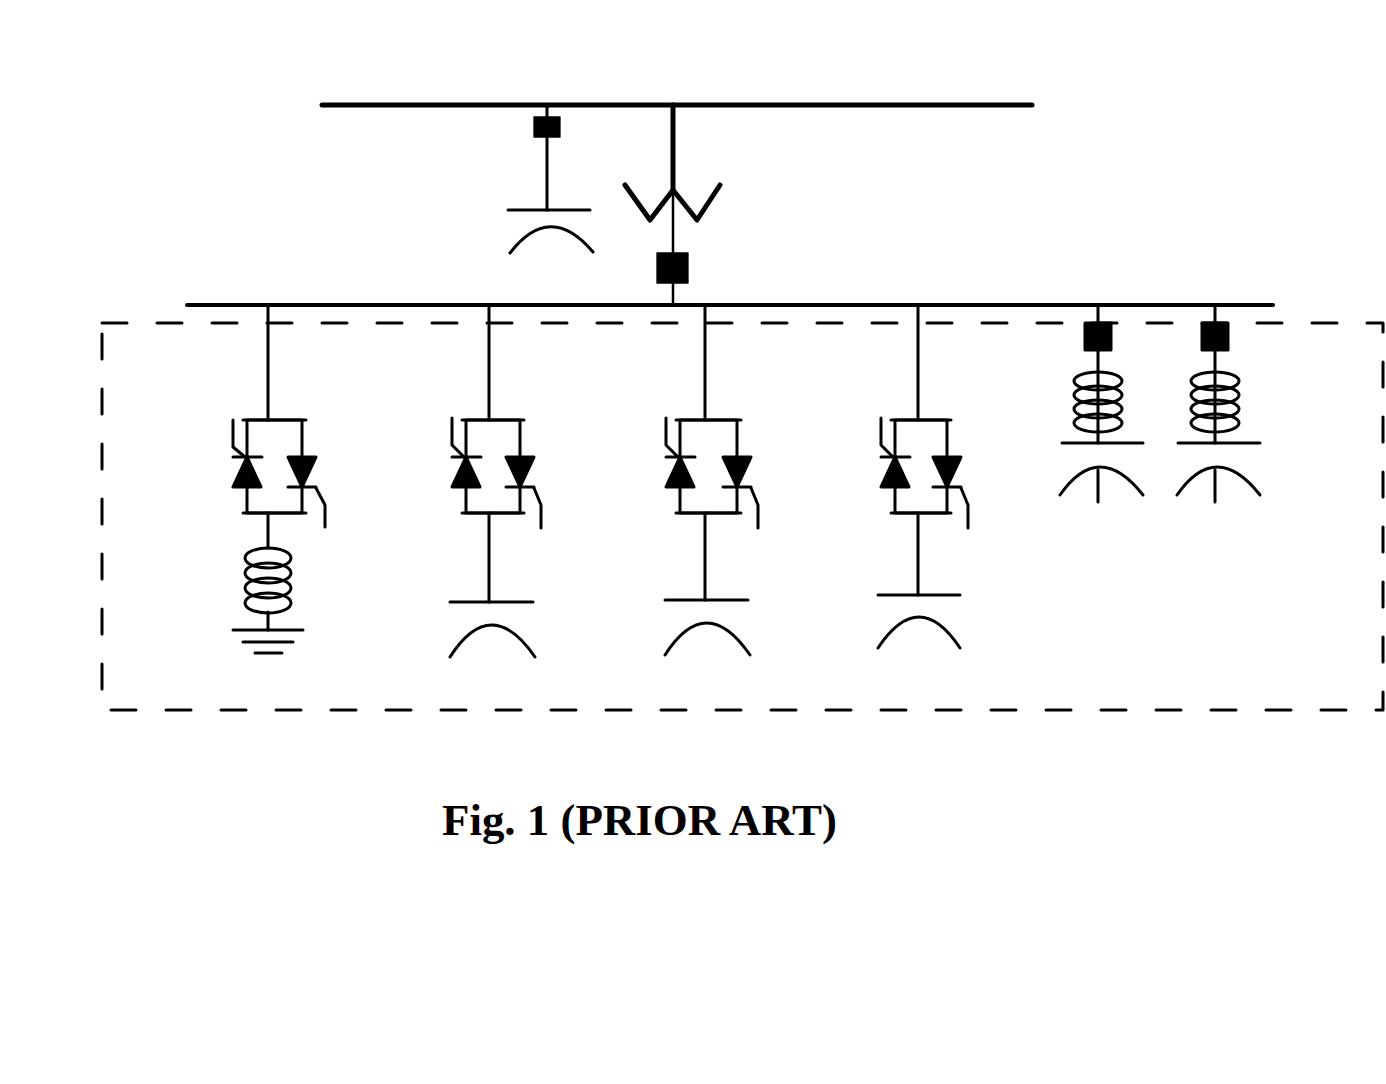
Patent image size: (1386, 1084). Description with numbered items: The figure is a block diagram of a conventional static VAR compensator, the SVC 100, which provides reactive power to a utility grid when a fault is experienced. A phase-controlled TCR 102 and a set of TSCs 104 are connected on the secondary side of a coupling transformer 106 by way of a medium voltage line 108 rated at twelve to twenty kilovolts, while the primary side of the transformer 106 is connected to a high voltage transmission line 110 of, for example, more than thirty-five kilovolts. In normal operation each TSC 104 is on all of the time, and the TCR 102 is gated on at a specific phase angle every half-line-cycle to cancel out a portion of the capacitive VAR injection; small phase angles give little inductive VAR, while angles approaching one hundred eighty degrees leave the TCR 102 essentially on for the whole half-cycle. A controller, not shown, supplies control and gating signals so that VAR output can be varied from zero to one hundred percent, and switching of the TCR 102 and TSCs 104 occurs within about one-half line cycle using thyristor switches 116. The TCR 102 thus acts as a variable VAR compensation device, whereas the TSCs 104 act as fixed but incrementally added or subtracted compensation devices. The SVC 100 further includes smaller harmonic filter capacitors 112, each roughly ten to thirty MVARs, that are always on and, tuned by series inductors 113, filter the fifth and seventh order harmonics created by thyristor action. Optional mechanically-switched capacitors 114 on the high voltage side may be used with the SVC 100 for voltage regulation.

The SVC 100 is at (165, 676).
The phase-controlled TCR 102 is at (223, 505).
The TSCs 104 is at (683, 543).
The coupling transformer 106 is at (695, 162).
The medium voltage line 108 is at (1267, 301).
The high voltage transmission line 110 is at (1012, 101).
The harmonic filter capacitors 112 is at (1068, 463).
The inductors 113 is at (1080, 397).
The mechanically-switched capacitors 114 is at (510, 212).
The thyristor switches 116 is at (303, 455).